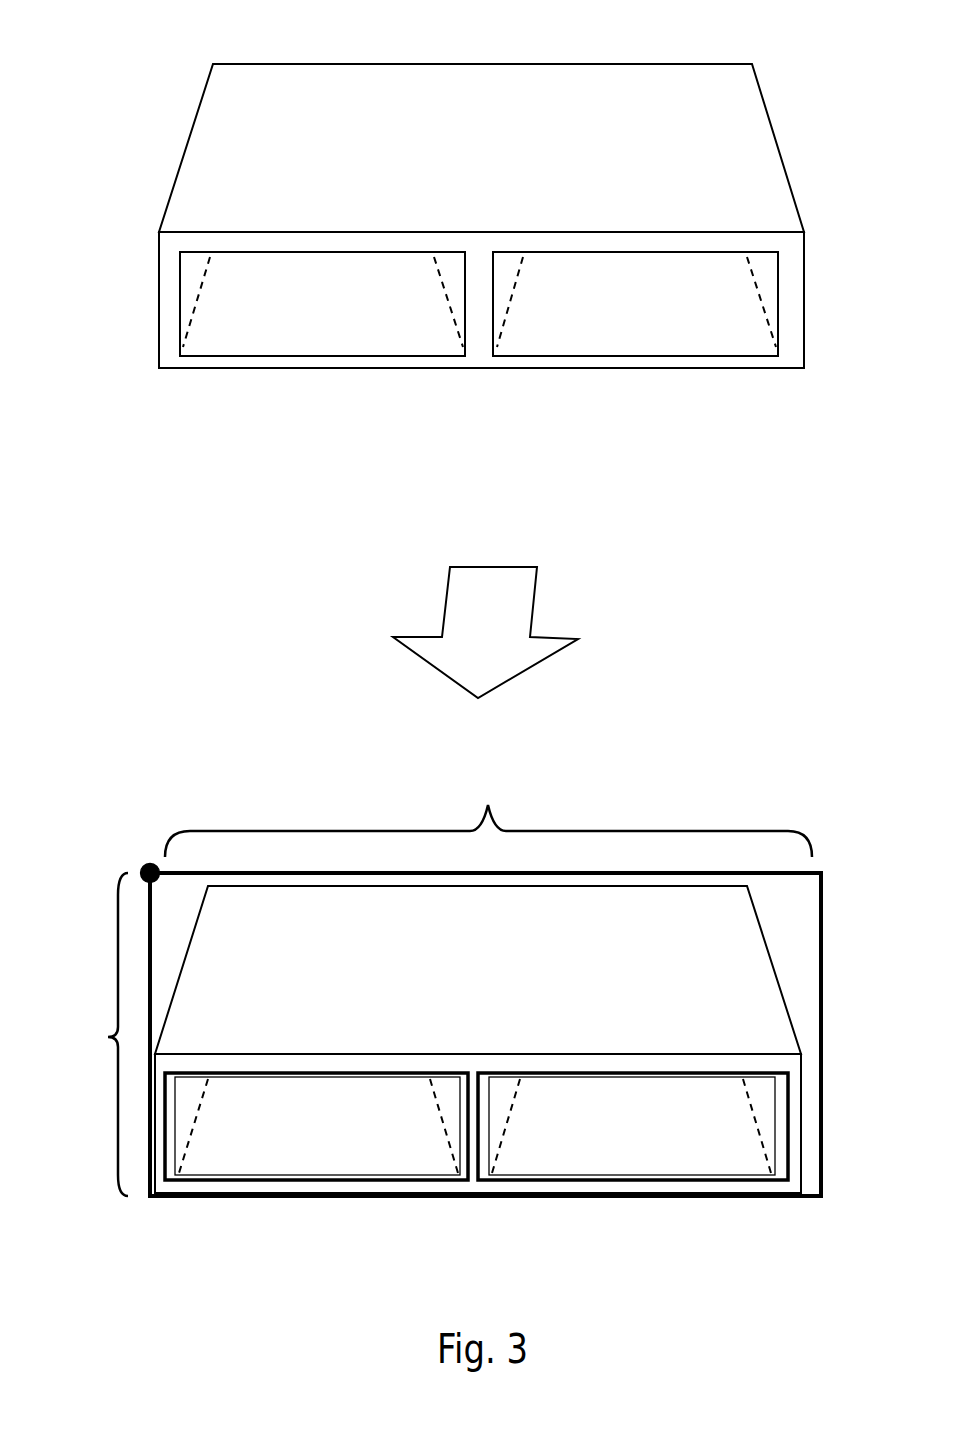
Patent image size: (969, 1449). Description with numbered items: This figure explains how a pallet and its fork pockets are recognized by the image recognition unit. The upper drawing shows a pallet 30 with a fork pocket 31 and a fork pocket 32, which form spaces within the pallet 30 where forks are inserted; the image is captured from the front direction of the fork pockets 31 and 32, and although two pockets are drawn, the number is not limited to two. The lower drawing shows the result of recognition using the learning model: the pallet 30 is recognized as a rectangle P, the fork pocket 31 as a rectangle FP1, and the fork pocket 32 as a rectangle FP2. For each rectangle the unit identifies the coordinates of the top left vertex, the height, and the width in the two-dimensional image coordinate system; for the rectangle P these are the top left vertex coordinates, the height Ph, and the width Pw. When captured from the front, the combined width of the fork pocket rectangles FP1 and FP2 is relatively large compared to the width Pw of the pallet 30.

The pallet 30 is at (495, 63).
The fork pocket 31 is at (322, 328).
The fork pocket 32 is at (651, 327).
The rectangle P is at (822, 910).
The width of the rectangle P Pw is at (488, 813).
The height of the rectangle P Ph is at (89, 1034).
The rectangle FP1 is at (320, 1072).
The rectangle FP2 is at (603, 1072).